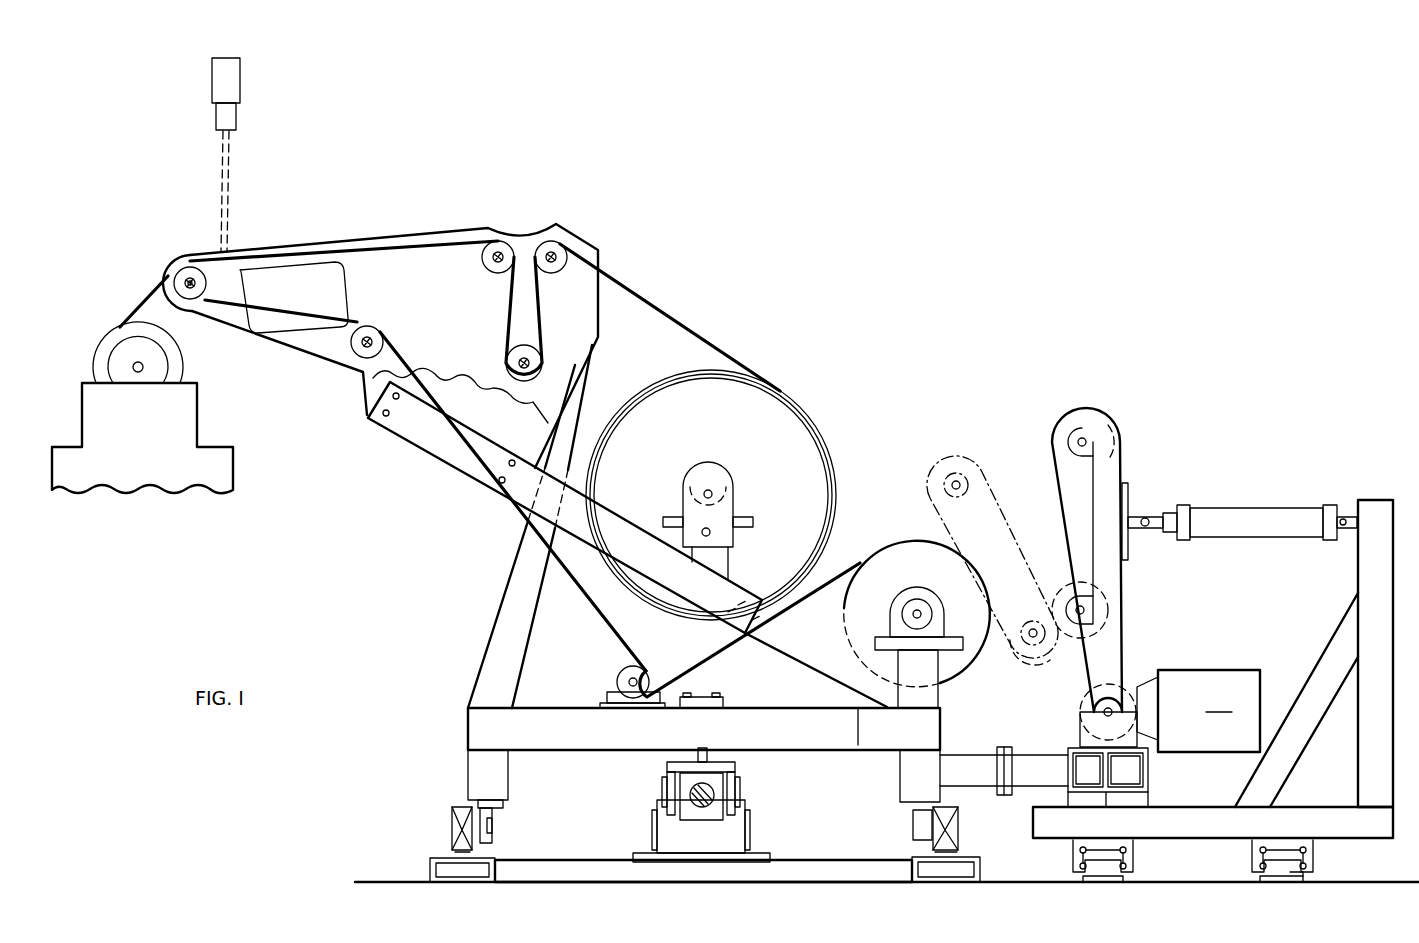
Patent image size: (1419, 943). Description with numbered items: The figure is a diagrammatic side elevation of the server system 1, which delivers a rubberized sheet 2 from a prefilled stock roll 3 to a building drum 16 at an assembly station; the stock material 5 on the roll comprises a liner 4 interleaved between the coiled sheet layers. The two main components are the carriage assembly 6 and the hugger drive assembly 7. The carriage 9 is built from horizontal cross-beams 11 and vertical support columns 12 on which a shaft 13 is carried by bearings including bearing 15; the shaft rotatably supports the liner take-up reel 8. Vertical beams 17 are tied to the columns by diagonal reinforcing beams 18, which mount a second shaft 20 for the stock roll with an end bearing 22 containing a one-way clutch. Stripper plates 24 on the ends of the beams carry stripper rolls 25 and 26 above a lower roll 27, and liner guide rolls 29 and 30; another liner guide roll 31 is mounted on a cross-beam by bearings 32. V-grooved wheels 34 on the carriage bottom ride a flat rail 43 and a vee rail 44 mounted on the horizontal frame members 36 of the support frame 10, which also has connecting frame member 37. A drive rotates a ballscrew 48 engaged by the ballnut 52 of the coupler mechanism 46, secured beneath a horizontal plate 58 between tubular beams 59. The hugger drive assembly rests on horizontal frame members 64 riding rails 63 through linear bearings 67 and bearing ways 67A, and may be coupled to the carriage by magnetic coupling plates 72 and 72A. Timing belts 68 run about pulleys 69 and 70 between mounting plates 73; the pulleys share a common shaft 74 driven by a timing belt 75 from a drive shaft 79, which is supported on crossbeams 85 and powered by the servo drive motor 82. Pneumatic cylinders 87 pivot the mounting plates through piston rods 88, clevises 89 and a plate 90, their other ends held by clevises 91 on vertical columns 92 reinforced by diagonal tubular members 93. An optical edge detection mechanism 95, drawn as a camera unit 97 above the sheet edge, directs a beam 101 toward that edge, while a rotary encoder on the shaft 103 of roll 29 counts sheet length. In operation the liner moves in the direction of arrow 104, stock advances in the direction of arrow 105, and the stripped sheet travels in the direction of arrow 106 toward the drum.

The server system 1 is at (617, 248).
The rubberized sheet 2 is at (514, 280).
The prefilled stock roll 3 is at (772, 420).
The liner 4 is at (667, 322).
The stock material 5 is at (722, 334).
The carriage assembly 6 is at (465, 588).
The hugger drive assembly 7 is at (1157, 462).
The liner take-up reel 8 is at (975, 660).
The carriage 9 is at (462, 745).
The support frame 10 is at (620, 884).
The cross-beams 11 is at (573, 735).
The vertical support columns 12 is at (918, 772).
The shaft 13 is at (927, 612).
The bearing 15 is at (900, 611).
The building drum 16 is at (112, 343).
The vertically extending beams 17 is at (485, 665).
The reinforcing beams 18 is at (800, 652).
The second shaft 20 is at (724, 496).
The end bearing 22 is at (700, 475).
The stripper plates 24 is at (432, 268).
The stripper roll 25 is at (565, 270).
The stripper roll 26 is at (488, 265).
The lower roll 27 is at (512, 362).
The liner guide roll 29 is at (177, 268).
The liner guide roll 30 is at (350, 343).
The liner guide roll 31 is at (637, 670).
The bearings 32 is at (608, 697).
The V-grooved wheels 34 is at (451, 828).
The horizontal frame members 36 is at (430, 870).
The horizontal connecting frame member 37 is at (780, 884).
The flat rail 43 is at (947, 855).
The vee rail 44 is at (465, 854).
The coupler mechanism 46 is at (736, 800).
The ballscrew 48 is at (701, 806).
The ballnut 52 is at (716, 818).
The horizontal plate 58 is at (724, 704).
The tubular shaped beams 59 is at (862, 745).
The rails 63 is at (1108, 883).
The horizontal support frame members 64 is at (1195, 828).
The linear bearings 67 is at (1313, 858).
The bearing ways 67A is at (1300, 878).
The timing belts 68 is at (1048, 495).
The pulleys 69 is at (1090, 420).
The pulleys 70 is at (1074, 593).
The magnetic coupling plate 72 is at (1012, 772).
The magnetic coupling plate 72A is at (997, 765).
The mounting plates 73 is at (1117, 655).
The common shaft 74 is at (1087, 611).
The timing belt 75 is at (1077, 678).
The drive shaft 79 is at (1128, 718).
The servo drive motor 82 is at (1198, 711).
The crossbeams 85 is at (1150, 778).
The pneumatic cylinders 87 is at (1257, 528).
The piston rods 88 is at (1164, 533).
The clevises 89 is at (1151, 516).
The plate 90 is at (1128, 556).
The clevises 91 is at (1355, 512).
The vertical columns 92 is at (1368, 785).
The diagonally extending square tubular members 93 is at (1328, 680).
The optical edge detection mechanism 95 is at (262, 114).
The spray nozzle 97 is at (211, 82).
The beam 101 is at (220, 167).
The shaft 103 is at (196, 293).
The arrow 104 is at (520, 568).
The arrow 105 is at (648, 300).
The arrow 106 is at (300, 229).